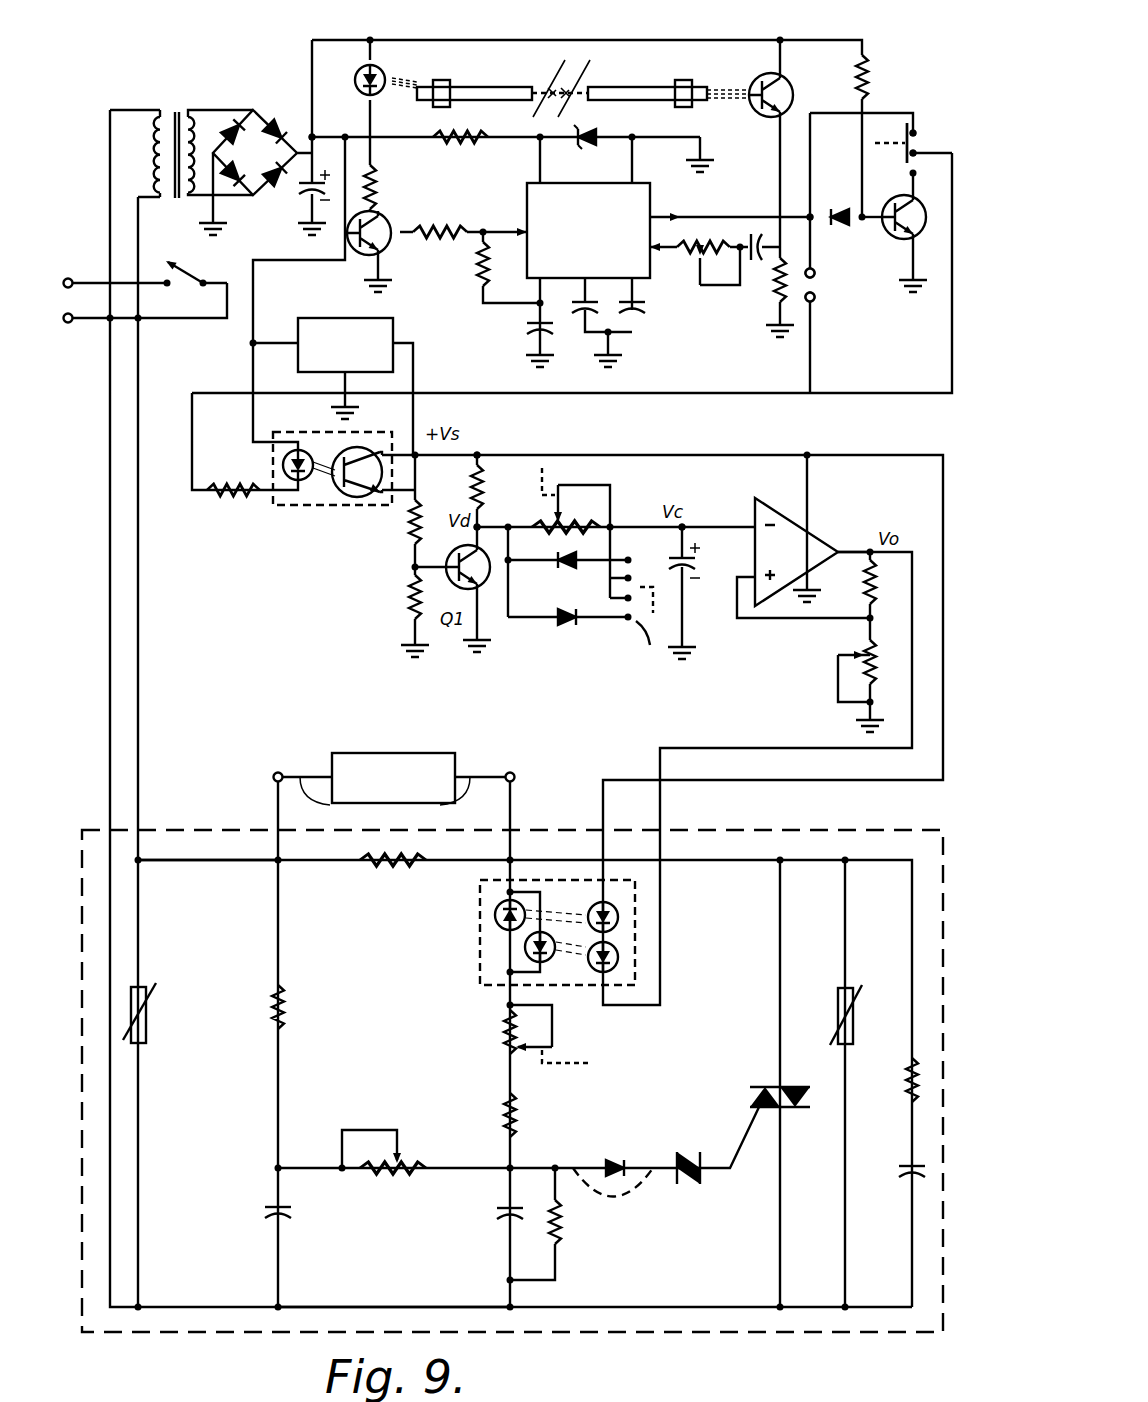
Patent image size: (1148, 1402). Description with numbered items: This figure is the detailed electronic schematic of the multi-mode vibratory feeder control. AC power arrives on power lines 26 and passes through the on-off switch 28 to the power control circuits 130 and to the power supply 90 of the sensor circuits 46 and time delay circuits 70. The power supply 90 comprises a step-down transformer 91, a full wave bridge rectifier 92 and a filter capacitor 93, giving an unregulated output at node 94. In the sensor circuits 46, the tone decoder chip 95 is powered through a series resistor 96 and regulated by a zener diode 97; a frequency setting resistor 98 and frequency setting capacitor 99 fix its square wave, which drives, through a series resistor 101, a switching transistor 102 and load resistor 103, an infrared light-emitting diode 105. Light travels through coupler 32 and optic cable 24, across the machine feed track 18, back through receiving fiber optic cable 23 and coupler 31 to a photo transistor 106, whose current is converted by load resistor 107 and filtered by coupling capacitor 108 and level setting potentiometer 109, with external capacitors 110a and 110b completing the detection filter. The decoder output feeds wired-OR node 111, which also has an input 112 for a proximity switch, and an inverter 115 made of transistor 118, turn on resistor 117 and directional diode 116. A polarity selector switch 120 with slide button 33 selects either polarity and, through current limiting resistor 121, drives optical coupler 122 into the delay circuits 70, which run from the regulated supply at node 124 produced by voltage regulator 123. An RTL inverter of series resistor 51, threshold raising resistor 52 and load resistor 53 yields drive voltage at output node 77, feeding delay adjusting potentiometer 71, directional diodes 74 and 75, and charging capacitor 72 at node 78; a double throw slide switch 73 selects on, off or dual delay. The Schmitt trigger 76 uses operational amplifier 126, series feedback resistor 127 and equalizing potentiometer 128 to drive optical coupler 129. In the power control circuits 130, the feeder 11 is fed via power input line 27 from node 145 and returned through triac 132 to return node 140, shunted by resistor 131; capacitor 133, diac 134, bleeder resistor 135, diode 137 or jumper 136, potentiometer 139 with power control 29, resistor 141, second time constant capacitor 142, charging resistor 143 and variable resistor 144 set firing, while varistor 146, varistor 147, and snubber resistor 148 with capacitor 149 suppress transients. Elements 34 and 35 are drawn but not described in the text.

The feeder 11 is at (380, 753).
The machine feed track 18 is at (575, 76).
The receiving fiber optic cable 23 is at (667, 76).
The optic cable 24 is at (508, 86).
The power lines 26 is at (68, 327).
The power input line 27 is at (385, 801).
The on-off switch 28 is at (188, 276).
The power control 29 is at (575, 1062).
The coupler 31 is at (685, 86).
The coupler 32 is at (474, 76).
The slide button 33 is at (870, 143).
The potentiometer shaft 34 is at (550, 469).
The switch linkage 35 is at (656, 600).
The sensor circuits 46 is at (848, 362).
The series resistor 51 is at (412, 528).
The threshold raising resistor 52 is at (412, 606).
The load resistor 53 is at (473, 482).
The time delay circuits 70 is at (615, 625).
The delay adjusting potentiometer 71 is at (606, 522).
The charging capacitor 72 is at (678, 563).
The double throw slide switch 73 is at (637, 646).
The directional diode 74 is at (561, 626).
The directional diode 75 is at (562, 570).
The Schmitt trigger 76 is at (782, 492).
The output node 77 is at (483, 526).
The node 78 is at (693, 526).
The power supply 90 is at (161, 130).
The step-down transformer 91 is at (177, 131).
The full wave bridge rectifier 92 is at (277, 112).
The filter capacitor 93 is at (308, 200).
The node 94 is at (315, 134).
The tone decoder chip 95 is at (526, 205).
The series resistor 96 is at (460, 143).
The zener diode 97 is at (590, 144).
The frequency setting resistor 98 is at (480, 286).
The frequency setting capacitor 99 is at (522, 322).
The series resistor 101 is at (451, 228).
The switching transistor 102 is at (388, 254).
The load resistor 103 is at (378, 180).
The infrared light-emitting diode 105 is at (348, 66).
The photo transistor 106 is at (790, 90).
The load resistor 107 is at (774, 298).
The coupling capacitor 108 is at (752, 260).
The level setting potentiometer 109 is at (699, 243).
The external capacitor 110a is at (641, 316).
The external capacitor 110b is at (586, 322).
The wired-OR node 111 is at (806, 216).
The input 112 is at (821, 292).
The inverter 115 is at (878, 242).
The directional diode 116 is at (838, 210).
The turn on resistor 117 is at (870, 77).
The transistor 118 is at (873, 224).
The polarity selector switch 120 is at (883, 113).
The current limiting resistor 121 is at (228, 496).
The optical coupler 122 is at (318, 510).
The integrated circuit voltage regulator 123 is at (331, 318).
The node 124 is at (477, 454).
The operational amplifier 126 is at (826, 539).
The series feedback resistor 127 is at (870, 582).
The equalizing potentiometer 128 is at (862, 654).
The optical coupler 129 is at (478, 930).
The power control circuits 130 is at (743, 828).
The resistor 131 is at (397, 866).
The power control triac 132 is at (762, 1088).
The capacitor 133 is at (498, 1218).
The diac 134 is at (693, 1150).
The bleeder resistor 135 is at (562, 1230).
The jumper 136 is at (602, 1190).
The diode 137 is at (616, 1157).
The potentiometer 139 is at (506, 1040).
The return node 140 is at (372, 1306).
The minimum resistance setting resistor 141 is at (508, 1112).
The second time constant capacitor 142 is at (262, 1213).
The charging resistor 143 is at (288, 1006).
The variable resistor 144 is at (387, 1176).
The node 145 is at (190, 863).
The varistor 146 is at (153, 1028).
The varistor 147 is at (840, 1005).
The resistor 148 is at (900, 1080).
The capacitor 149 is at (900, 1170).